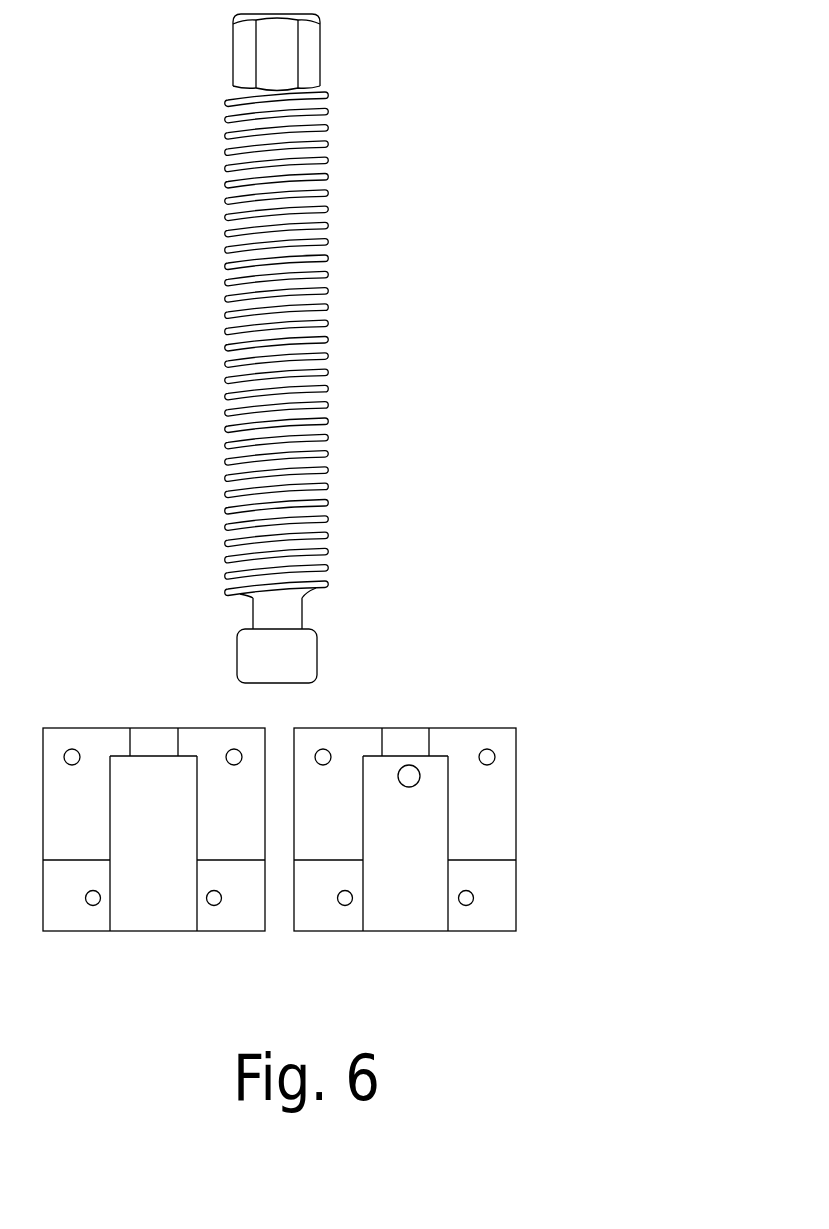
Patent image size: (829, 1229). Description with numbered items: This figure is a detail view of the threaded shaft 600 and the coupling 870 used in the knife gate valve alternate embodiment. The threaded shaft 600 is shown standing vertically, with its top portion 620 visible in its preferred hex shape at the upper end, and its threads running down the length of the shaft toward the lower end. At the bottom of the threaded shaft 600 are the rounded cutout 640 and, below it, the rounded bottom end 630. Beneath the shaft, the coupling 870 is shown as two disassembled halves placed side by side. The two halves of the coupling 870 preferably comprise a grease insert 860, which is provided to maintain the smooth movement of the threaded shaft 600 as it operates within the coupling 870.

The threaded shaft 600 is at (325, 338).
The top portion 620 is at (273, 36).
The rounded bottom end 630 is at (283, 657).
The rounded cutout 640 is at (287, 608).
The grease insert 860 is at (410, 778).
The coupling 870 is at (315, 918).